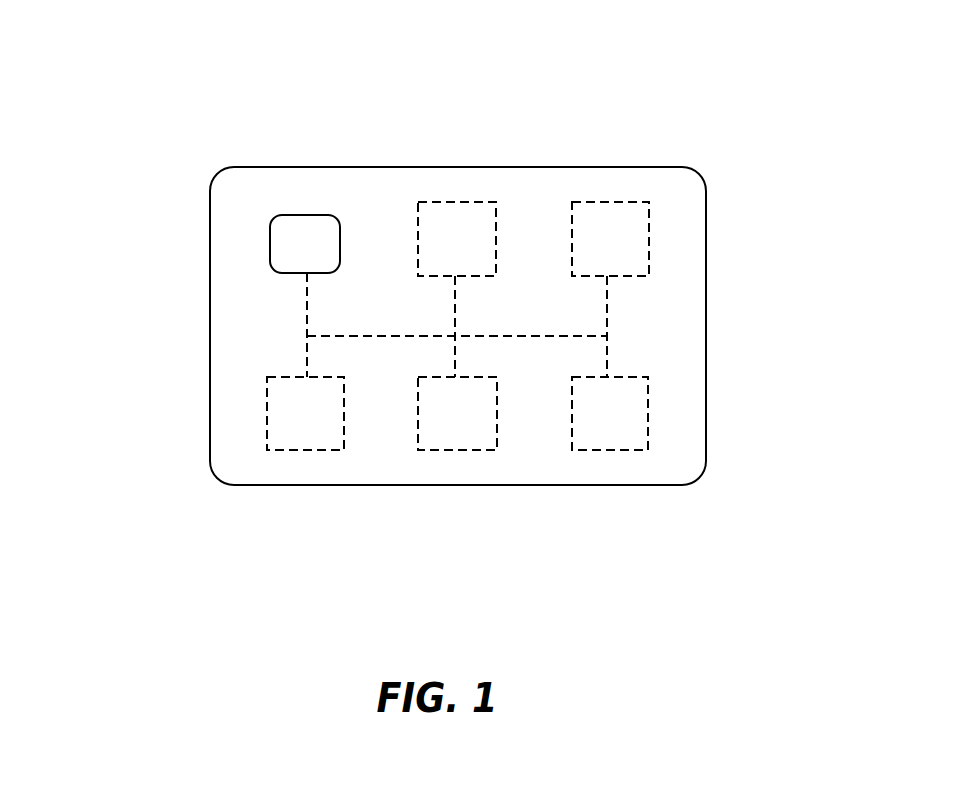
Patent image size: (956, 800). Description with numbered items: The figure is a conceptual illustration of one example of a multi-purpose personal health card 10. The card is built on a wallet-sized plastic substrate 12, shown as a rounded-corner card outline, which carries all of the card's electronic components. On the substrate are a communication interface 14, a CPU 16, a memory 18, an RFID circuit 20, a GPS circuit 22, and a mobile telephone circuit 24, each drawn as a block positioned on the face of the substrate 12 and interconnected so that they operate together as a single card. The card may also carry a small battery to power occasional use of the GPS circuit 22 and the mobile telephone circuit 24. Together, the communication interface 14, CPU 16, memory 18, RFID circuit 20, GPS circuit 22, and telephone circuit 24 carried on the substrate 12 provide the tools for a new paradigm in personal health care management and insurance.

The personal health card 10 is at (212, 126).
The plastic substrate 12 is at (706, 378).
The communication interface 14 is at (270, 243).
The CPU 16 is at (455, 202).
The memory 18 is at (607, 202).
The RFID circuit 20 is at (297, 450).
The GPS circuit 22 is at (461, 450).
The mobile telephone circuit 24 is at (612, 450).